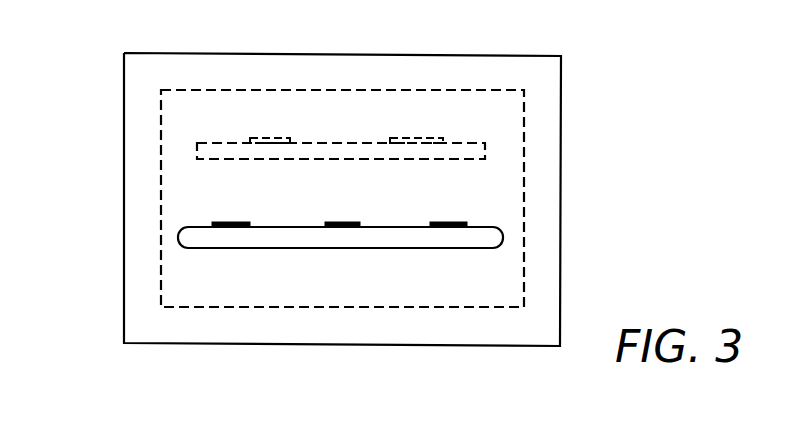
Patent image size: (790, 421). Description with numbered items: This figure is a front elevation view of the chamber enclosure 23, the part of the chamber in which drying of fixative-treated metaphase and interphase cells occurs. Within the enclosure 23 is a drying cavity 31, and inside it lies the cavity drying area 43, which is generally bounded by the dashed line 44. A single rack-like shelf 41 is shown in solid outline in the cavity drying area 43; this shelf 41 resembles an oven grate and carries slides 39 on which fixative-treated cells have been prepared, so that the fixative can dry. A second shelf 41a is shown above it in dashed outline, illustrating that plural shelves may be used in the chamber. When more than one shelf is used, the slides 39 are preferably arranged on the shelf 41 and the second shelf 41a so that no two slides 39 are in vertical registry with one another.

The enclosure 23 is at (561, 178).
The drying cavity 31 is at (483, 335).
The slide 39 is at (265, 138).
The shelf 41 is at (482, 241).
The second shelf 41a is at (473, 143).
The cavity drying area 43 is at (178, 173).
The dashed line 44 is at (524, 115).